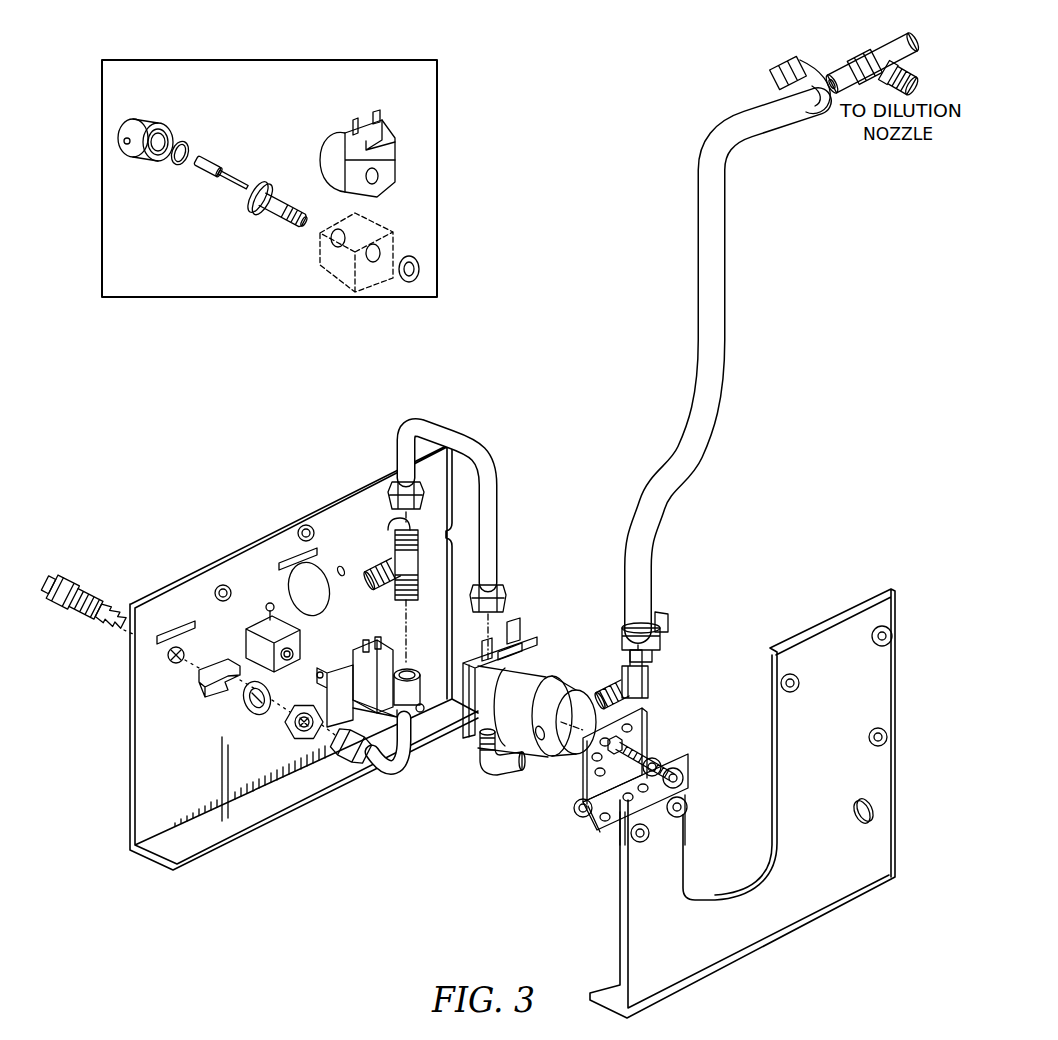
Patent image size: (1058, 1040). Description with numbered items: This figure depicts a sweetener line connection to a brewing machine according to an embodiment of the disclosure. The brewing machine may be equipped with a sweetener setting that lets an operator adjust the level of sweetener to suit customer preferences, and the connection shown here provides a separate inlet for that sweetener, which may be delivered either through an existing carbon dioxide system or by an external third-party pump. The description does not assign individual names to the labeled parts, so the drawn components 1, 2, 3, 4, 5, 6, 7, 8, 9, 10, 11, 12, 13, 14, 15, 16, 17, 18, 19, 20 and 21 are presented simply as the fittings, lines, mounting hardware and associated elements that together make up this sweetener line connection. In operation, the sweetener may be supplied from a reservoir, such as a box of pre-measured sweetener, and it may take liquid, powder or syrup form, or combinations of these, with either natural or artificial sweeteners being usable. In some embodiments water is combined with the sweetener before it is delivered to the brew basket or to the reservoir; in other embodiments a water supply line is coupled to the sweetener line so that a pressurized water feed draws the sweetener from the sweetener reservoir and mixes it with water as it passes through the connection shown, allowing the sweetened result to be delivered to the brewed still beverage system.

The inlet fitting 1 is at (70, 583).
The washer 2 is at (240, 707).
The nut 3 is at (288, 730).
The tube 4 is at (407, 773).
The elbow fitting 5 is at (648, 690).
The solenoid valve 6 is at (567, 752).
The cap 7 is at (160, 112).
The seal 8 is at (190, 143).
The solenoid coil 9 is at (322, 147).
The plunger 10 is at (258, 205).
The mounting plate 11 is at (643, 727).
The elbow fitting 12 is at (487, 773).
The tube 13 is at (397, 433).
The tee fitting 14 is at (378, 567).
The flow switch 15 is at (268, 628).
The solenoid valve 16 is at (415, 752).
The hose 17 is at (726, 288).
The elbow fitting 18 is at (783, 68).
The tee fitting 19 is at (867, 52).
The slot 20 is at (287, 557).
The slot 21 is at (162, 637).